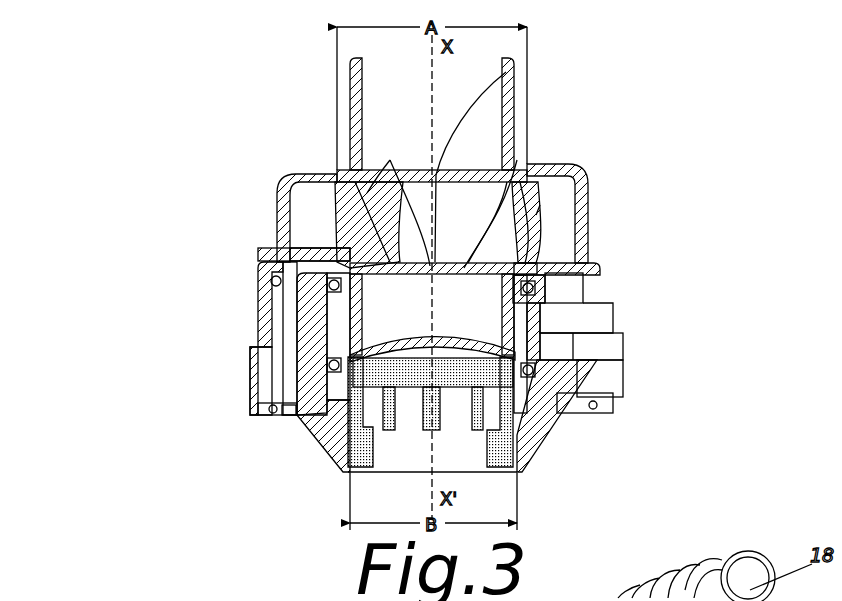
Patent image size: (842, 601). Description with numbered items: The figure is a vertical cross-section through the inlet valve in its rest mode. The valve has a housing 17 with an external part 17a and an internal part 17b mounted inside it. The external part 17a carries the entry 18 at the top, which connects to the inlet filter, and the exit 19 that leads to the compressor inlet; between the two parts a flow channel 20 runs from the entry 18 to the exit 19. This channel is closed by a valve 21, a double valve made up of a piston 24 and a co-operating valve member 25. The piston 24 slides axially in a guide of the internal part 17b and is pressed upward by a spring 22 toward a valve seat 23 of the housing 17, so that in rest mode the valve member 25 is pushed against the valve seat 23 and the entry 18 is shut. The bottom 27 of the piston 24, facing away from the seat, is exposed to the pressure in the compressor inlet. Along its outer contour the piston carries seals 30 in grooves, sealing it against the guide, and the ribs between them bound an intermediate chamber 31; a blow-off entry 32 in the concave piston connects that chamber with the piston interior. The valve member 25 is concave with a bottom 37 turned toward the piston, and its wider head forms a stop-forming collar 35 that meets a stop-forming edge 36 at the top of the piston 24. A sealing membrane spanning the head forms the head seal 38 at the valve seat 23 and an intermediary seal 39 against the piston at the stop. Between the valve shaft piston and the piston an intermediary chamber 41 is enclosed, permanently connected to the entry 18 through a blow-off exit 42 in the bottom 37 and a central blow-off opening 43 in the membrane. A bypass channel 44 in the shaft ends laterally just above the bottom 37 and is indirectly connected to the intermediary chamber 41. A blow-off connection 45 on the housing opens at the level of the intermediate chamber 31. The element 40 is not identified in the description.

The housing 17 is at (118, 157).
The external part 17a is at (277, 235).
The internal part 17b is at (330, 430).
The entry 18 is at (515, 103).
The exit 19 is at (283, 420).
The flow channel 20 is at (277, 328).
The valve 21 is at (540, 212).
The spring 22 is at (487, 397).
The valve seat 23 is at (338, 172).
The piston 24 is at (250, 380).
The valve member 25 is at (350, 178).
The bottom 27 is at (403, 390).
The seal 30 is at (276, 281).
The intermediate chamber 31 is at (600, 340).
The blow-off entry 32 is at (575, 318).
The stop-forming collar 35 is at (278, 252).
The stop-forming edge 36 is at (258, 263).
The bottom 37 is at (527, 168).
The head seal 38 is at (410, 178).
The intermediary seal 39 is at (560, 173).
The outer curve 40 is at (540, 233).
The intermediary chamber 41 is at (412, 313).
The blow-off exit 42 is at (397, 182).
The central blow-off opening 43 is at (506, 72).
The bypass channel 44 is at (530, 263).
The blow-off connection 45 is at (618, 348).